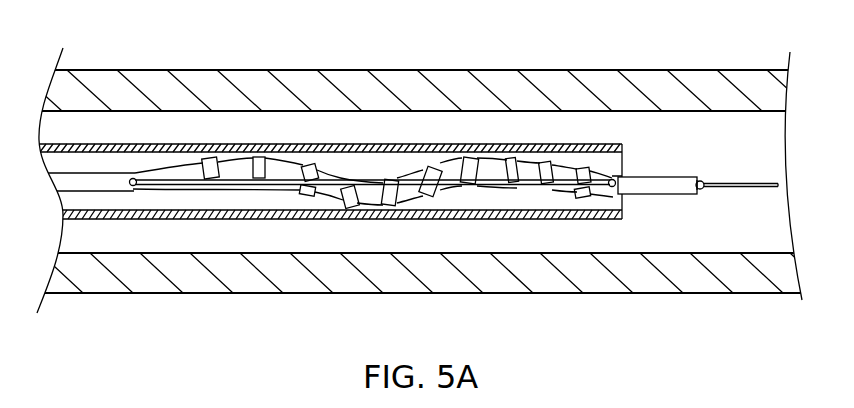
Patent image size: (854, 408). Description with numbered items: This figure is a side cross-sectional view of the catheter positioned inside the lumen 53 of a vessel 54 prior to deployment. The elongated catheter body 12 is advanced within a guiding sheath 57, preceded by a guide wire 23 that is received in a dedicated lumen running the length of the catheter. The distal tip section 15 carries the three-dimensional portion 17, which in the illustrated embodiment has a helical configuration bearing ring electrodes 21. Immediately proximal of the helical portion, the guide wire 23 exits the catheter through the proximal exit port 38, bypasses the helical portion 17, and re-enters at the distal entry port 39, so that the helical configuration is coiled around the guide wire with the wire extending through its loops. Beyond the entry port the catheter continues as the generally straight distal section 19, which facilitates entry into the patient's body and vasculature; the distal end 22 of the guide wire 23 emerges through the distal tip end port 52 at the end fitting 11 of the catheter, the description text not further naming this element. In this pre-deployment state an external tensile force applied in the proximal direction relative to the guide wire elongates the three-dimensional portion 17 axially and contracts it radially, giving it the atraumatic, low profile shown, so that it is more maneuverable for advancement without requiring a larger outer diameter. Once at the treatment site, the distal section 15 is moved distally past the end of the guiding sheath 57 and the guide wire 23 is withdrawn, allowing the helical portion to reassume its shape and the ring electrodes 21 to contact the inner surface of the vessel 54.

The distal end fitting 11 is at (697, 176).
The catheter body 12 is at (90, 173).
The distal tip section 15 is at (372, 176).
The 3-D portion 17 is at (416, 205).
The generally straight distal section 19 is at (650, 176).
The ring electrodes 21 is at (255, 155).
The distal end of the guide wire 22 is at (778, 185).
The guide wire 23 is at (263, 178).
The proximal exit port 38 is at (136, 190).
The distal entry port 39 is at (613, 200).
The distal tip end port 52 is at (697, 196).
The lumen of the vessel 53 is at (763, 157).
The vessel 54 is at (528, 97).
The guiding sheath 57 is at (427, 144).